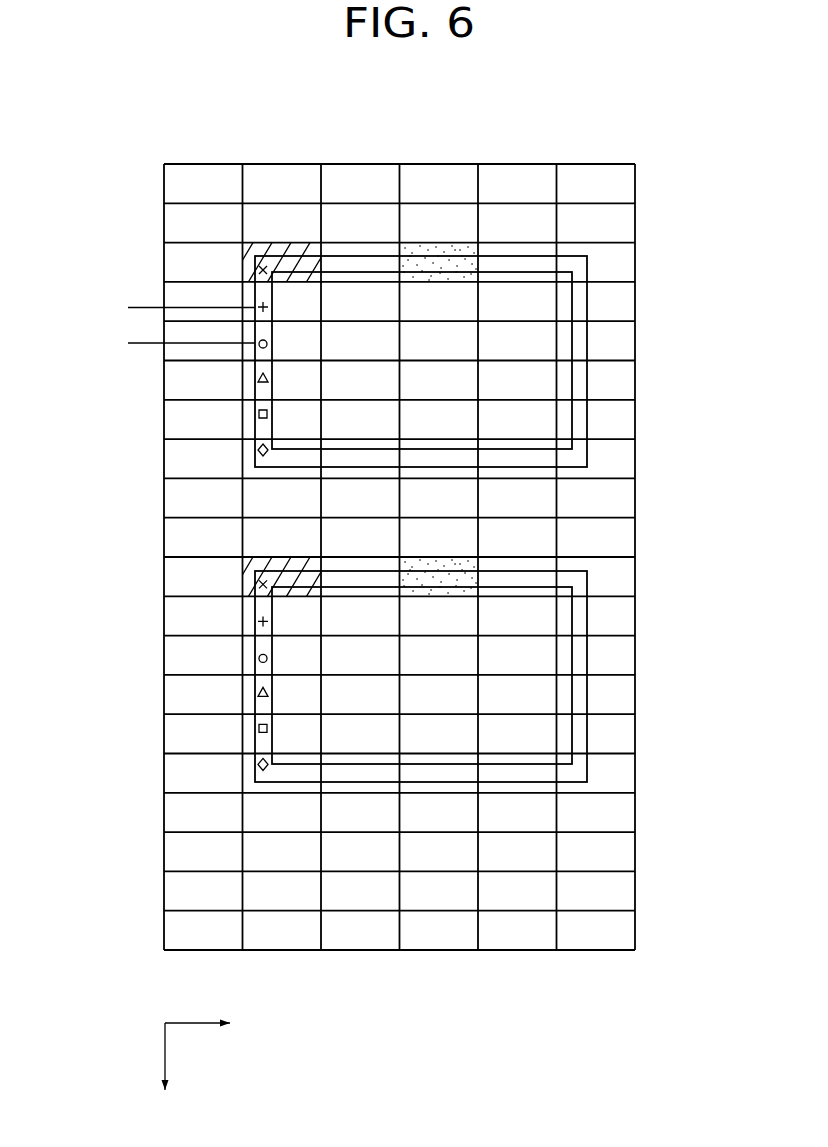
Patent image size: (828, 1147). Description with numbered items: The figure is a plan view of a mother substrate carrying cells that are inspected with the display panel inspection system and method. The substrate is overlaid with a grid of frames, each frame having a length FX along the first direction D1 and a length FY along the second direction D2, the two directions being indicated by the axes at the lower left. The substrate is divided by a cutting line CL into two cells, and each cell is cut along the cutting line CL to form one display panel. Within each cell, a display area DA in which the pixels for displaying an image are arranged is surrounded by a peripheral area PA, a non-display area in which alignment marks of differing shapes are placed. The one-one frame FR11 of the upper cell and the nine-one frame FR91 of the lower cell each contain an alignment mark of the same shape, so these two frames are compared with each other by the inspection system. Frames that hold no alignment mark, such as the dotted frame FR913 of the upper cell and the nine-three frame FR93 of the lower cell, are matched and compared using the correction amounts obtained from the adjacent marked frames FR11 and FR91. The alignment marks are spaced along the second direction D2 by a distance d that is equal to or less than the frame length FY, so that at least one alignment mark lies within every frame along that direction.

The third sub-region of first frame region (dotted) FR913 is at (418, 248).
The 1_1 frame FR11 is at (249, 258).
The distance d is at (134, 308).
The peripheral area PA is at (472, 361).
The display area DA is at (540, 347).
The cutting line CL is at (588, 425).
The 9_3 frame FR93 is at (418, 562).
The 9_1 frame FR91 is at (249, 573).
The length of one frame in the second direction FY is at (224, 832).
The frame pitch in first direction FX is at (321, 883).
The first direction D1 is at (213, 1024).
The second direction D2 is at (164, 1071).